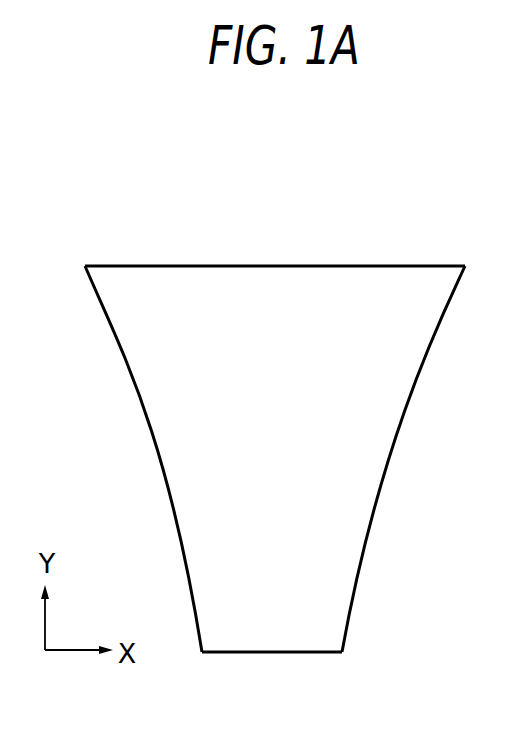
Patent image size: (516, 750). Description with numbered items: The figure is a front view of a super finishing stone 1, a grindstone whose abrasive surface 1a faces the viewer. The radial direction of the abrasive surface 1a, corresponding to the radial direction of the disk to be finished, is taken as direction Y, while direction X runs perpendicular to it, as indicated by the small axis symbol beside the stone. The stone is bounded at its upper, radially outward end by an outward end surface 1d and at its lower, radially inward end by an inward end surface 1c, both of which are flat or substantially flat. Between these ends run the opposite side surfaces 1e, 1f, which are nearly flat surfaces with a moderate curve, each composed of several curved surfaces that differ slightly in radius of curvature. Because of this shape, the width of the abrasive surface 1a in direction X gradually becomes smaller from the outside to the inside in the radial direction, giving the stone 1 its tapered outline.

The super finishing stone 1 is at (275, 423).
The abrasive surface 1a is at (143, 459).
The inward end surface 1c is at (278, 652).
The outward end surface 1d is at (348, 265).
The side surface 1e is at (168, 488).
The side surface 1f is at (377, 498).